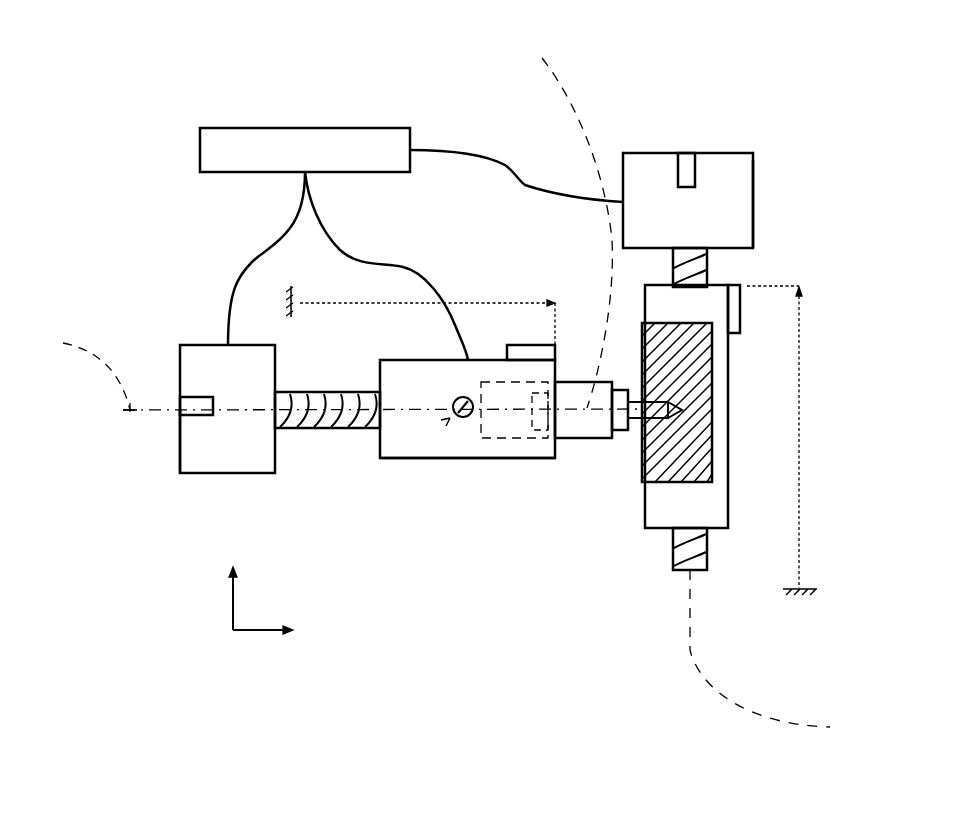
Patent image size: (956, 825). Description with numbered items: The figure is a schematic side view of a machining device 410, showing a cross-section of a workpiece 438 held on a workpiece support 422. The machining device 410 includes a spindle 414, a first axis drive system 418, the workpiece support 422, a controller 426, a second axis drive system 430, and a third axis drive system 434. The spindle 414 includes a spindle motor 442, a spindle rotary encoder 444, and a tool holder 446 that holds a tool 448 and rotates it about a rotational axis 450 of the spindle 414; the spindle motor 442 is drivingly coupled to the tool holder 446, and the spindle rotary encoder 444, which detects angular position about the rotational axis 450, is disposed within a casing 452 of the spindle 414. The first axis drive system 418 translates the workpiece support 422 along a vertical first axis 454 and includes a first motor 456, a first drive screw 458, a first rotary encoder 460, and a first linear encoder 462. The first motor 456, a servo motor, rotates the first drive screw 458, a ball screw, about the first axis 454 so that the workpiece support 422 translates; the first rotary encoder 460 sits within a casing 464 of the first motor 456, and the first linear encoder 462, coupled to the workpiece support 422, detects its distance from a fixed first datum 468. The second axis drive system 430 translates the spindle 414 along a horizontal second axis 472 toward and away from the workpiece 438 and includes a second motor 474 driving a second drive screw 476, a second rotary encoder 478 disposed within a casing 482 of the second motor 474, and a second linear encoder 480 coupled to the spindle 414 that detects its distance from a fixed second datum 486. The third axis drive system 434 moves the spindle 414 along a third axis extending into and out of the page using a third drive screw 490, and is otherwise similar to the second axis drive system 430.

The machining device 410 is at (108, 104).
The spindle 414 is at (498, 462).
The first axis drive system 418 is at (783, 200).
The workpiece support 422 is at (710, 528).
The controller 426 is at (307, 128).
The second axis drive system 430 is at (182, 495).
The third axis drive system 434 is at (450, 418).
The workpiece 438 is at (643, 483).
The spindle motor 442 is at (515, 438).
The spindle rotary encoder 444 is at (560, 458).
The tool holder 446 is at (618, 430).
The tool 448 is at (682, 410).
The rotational axis 450 is at (568, 223).
The casing 452 is at (381, 460).
The first axis 454 is at (782, 655).
The first motor 456 is at (733, 153).
The first drive screw 458 is at (707, 268).
The first rotary encoder 460 is at (680, 160).
The first linear encoder 462 is at (740, 285).
The casing 464 is at (755, 220).
The first datum 468 is at (812, 588).
The second axis 472 is at (77, 372).
The second motor 474 is at (210, 345).
The second drive screw 476 is at (318, 428).
The second rotary encoder 478 is at (200, 397).
The second linear encoder 480 is at (556, 357).
The casing 482 is at (180, 455).
The second datum 486 is at (295, 290).
The third drive screw 490 is at (467, 418).